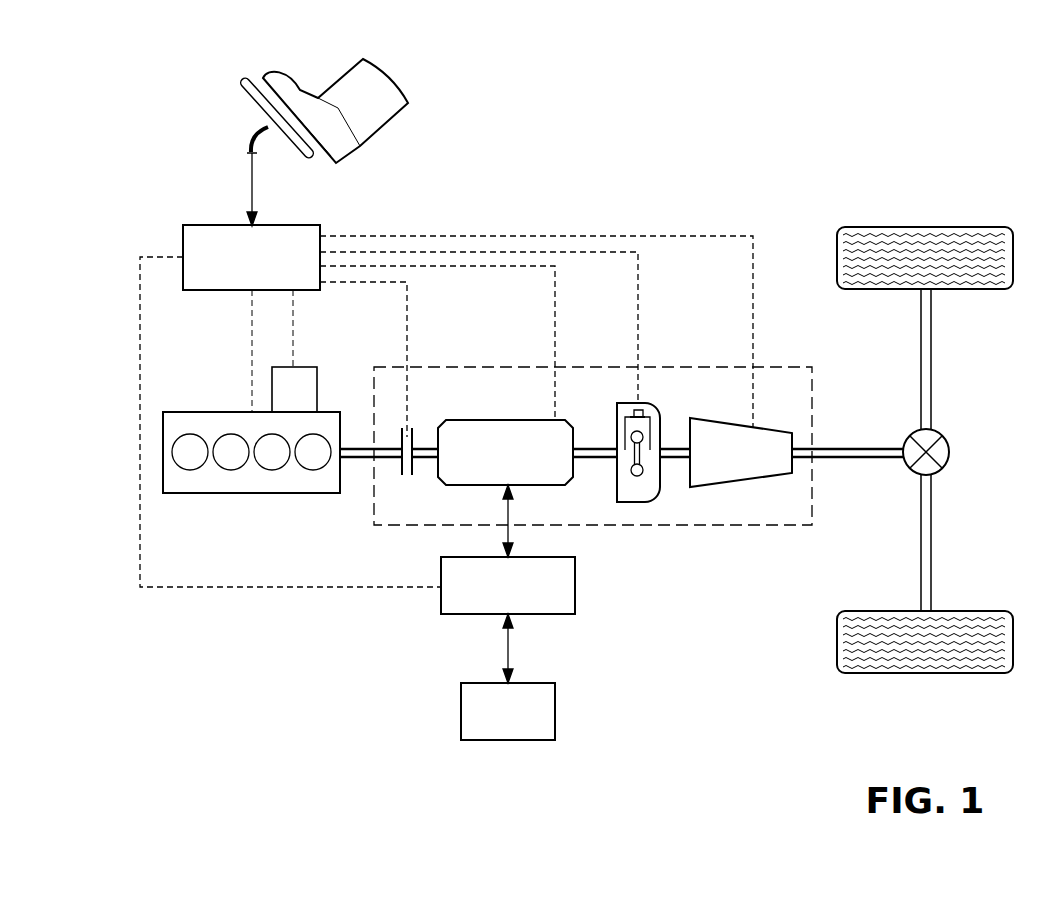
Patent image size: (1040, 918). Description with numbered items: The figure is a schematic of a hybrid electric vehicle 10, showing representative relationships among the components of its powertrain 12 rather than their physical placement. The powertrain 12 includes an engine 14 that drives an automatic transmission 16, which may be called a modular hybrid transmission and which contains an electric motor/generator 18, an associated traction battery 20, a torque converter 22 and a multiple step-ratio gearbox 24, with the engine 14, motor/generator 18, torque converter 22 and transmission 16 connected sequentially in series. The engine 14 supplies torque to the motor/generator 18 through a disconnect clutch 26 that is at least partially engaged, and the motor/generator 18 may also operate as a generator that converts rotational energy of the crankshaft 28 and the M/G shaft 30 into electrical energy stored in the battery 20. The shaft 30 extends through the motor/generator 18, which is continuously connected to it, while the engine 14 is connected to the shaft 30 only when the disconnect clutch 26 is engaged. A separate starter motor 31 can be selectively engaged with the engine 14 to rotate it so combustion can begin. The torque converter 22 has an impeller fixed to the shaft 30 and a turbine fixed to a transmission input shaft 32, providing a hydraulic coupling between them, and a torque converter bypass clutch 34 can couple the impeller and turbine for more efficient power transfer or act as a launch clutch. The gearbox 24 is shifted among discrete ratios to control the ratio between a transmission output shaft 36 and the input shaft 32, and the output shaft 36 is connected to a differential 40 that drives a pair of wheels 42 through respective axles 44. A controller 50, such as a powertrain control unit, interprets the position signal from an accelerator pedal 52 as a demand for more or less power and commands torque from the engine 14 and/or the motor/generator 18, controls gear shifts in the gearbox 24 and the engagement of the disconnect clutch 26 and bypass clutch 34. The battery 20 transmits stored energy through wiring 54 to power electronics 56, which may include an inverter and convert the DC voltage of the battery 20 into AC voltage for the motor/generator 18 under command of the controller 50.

The hybrid electric vehicle 10 is at (726, 153).
The powertrain 12 is at (358, 625).
The engine 14 is at (212, 412).
The automatic transmission 16 is at (608, 366).
The electric motor/generator 18 is at (510, 420).
The traction battery 20 is at (460, 713).
The torque converter 22 is at (633, 502).
The gearbox 24 is at (740, 478).
The disconnect clutch 26 is at (420, 478).
The crankshaft 28 is at (370, 446).
The M/G shaft 30 is at (425, 437).
The starter motor 31 is at (302, 367).
The transmission input shaft 32 is at (668, 446).
The torque converter bypass clutch 34 is at (642, 406).
The transmission output shaft 36 is at (872, 446).
The differential 40 is at (950, 452).
The wheels 42 is at (925, 226).
The axles 44 is at (932, 361).
The controller 50 is at (218, 224).
The accelerator pedal 52 is at (262, 116).
The wiring 54 is at (507, 653).
The power electronics 56 is at (577, 585).